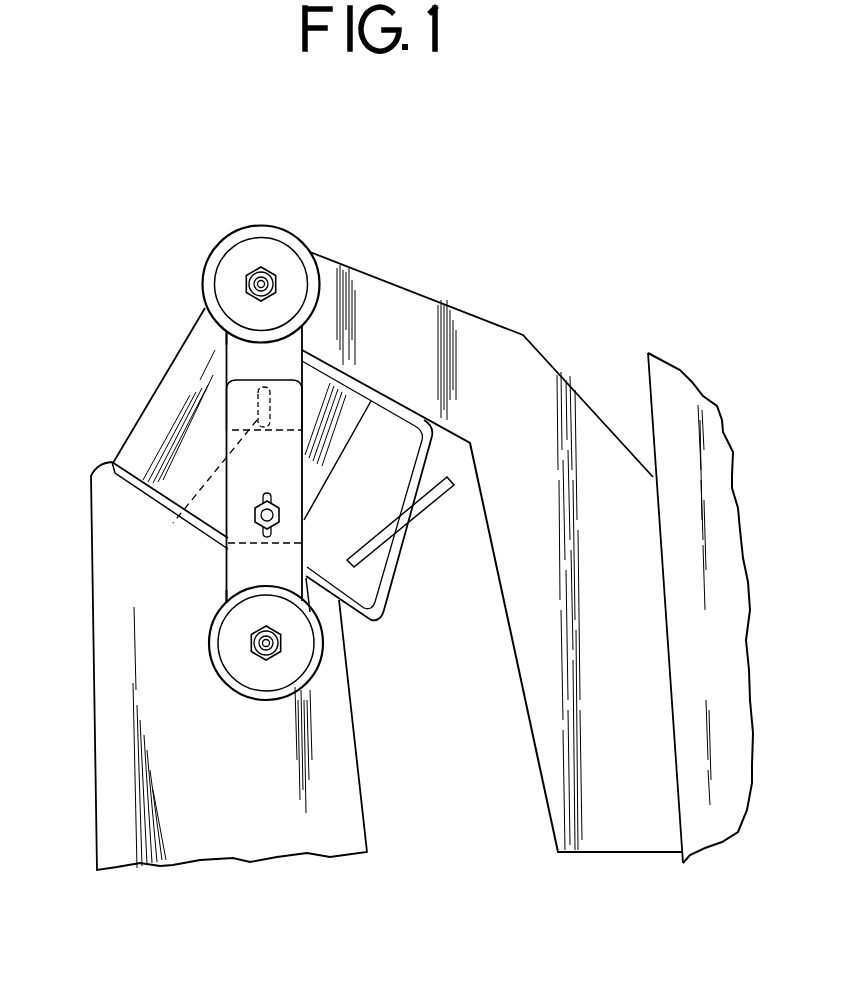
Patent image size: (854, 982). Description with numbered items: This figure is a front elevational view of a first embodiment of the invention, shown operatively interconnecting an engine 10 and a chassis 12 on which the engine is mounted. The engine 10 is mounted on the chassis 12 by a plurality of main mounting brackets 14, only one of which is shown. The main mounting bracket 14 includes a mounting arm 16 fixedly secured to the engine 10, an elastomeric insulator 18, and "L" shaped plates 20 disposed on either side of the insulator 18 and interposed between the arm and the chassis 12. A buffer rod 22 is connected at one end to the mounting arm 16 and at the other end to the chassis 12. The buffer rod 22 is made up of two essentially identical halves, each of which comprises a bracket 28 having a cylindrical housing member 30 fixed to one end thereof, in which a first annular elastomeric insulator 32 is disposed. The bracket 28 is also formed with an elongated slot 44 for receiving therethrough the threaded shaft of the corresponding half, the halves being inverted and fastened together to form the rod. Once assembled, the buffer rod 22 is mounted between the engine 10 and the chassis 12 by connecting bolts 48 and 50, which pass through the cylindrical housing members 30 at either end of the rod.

The engine 10 is at (710, 430).
The chassis 12 is at (343, 822).
The main mounting bracket 14 is at (118, 398).
The mounting arm 16 is at (387, 298).
The elastomeric insulator 18 is at (152, 445).
The "L" shaped plate 20 is at (402, 568).
The buffer rod 22 is at (219, 407).
The bracket 28 is at (237, 347).
The cylindrical housing member 30 is at (229, 233).
The first annular elastomeric insulator 32 is at (229, 270).
The elongated slot 44 is at (263, 533).
The connecting bolt 48 is at (270, 280).
The connecting bolt 50 is at (278, 650).